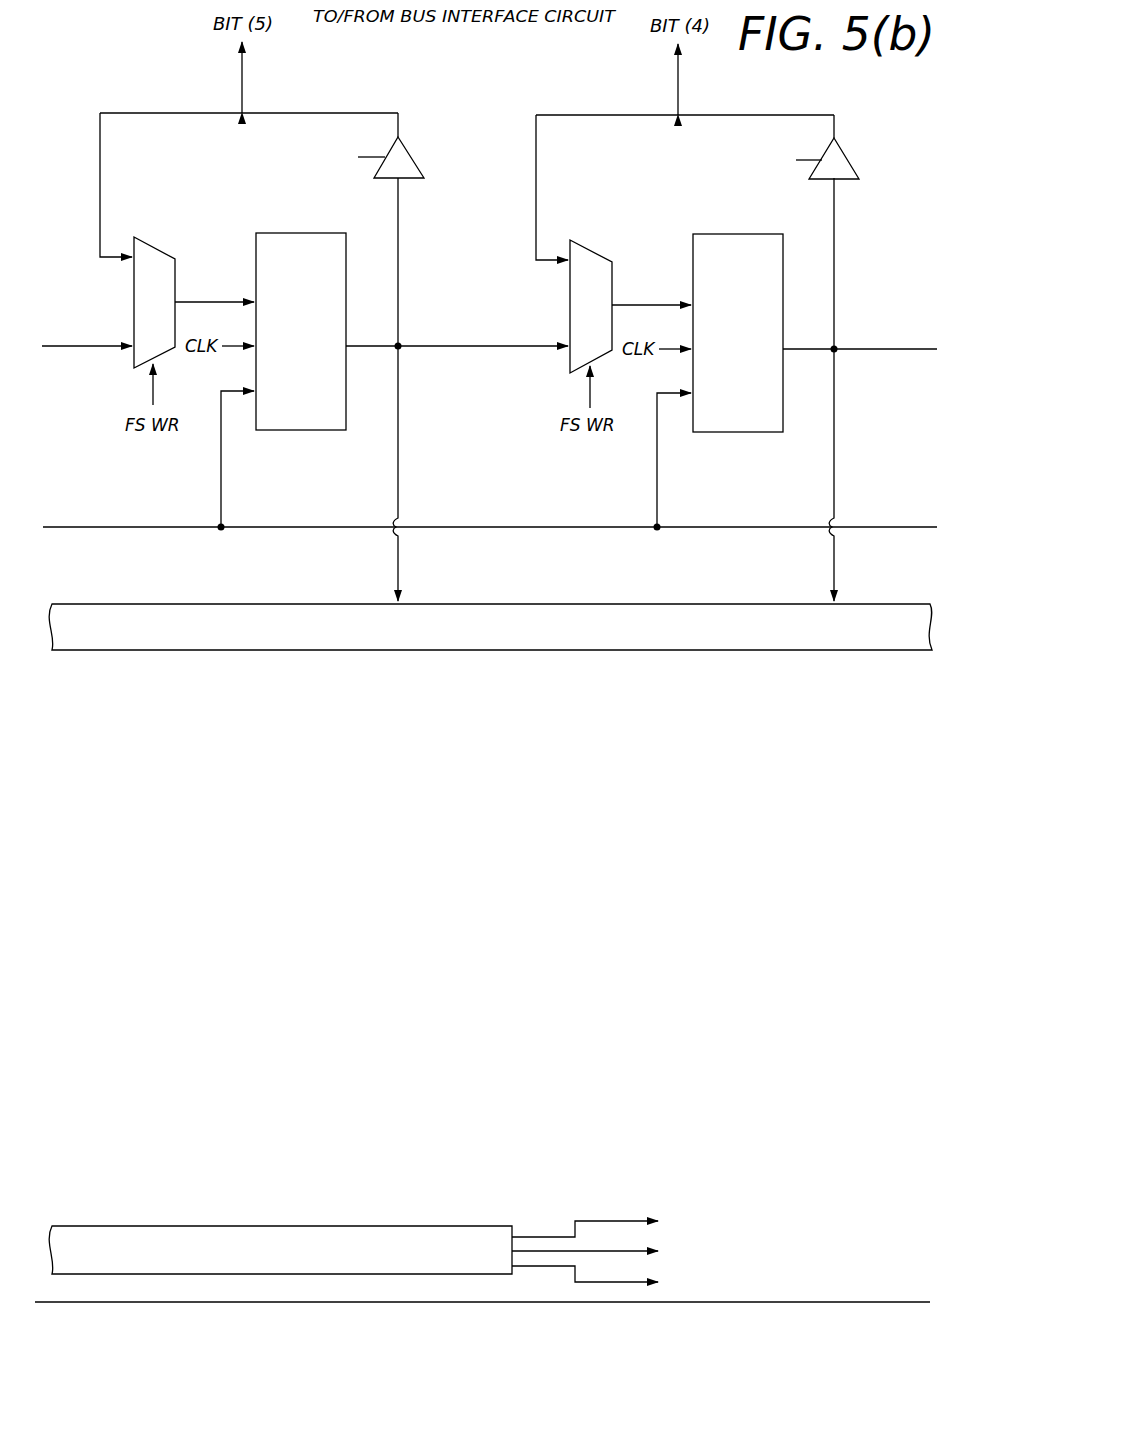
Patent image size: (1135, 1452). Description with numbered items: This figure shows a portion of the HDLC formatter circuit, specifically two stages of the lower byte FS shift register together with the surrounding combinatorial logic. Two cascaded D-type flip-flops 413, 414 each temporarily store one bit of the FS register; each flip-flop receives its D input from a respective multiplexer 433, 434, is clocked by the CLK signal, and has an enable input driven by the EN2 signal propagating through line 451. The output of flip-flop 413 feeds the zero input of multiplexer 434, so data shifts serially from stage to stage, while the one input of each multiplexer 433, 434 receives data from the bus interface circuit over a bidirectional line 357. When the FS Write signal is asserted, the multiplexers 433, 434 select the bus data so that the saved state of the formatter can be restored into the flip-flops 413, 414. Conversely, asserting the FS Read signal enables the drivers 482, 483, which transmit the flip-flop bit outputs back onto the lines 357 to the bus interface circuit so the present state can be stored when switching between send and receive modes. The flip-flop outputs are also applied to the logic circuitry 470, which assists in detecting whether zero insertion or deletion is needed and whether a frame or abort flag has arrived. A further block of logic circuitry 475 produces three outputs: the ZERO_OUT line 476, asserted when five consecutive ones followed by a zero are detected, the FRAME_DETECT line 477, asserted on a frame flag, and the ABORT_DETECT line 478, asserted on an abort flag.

The bus interface line 357 is at (290, 73).
The multiplexer 433 is at (164, 249).
The multiplexer 434 is at (595, 252).
The D-type flip-flop 413 is at (290, 432).
The D-type flip-flop 414 is at (730, 434).
The driver 482 is at (412, 180).
The driver 483 is at (848, 181).
The EN2 signal line 451 is at (350, 527).
The logic circuitry 470 is at (520, 603).
The logic circuitry 475 is at (178, 1226).
The ZERO_OUT line 476 is at (634, 1220).
The FRAME_DETECT line 477 is at (527, 1249).
The ABORT_DETECT line 478 is at (600, 1283).